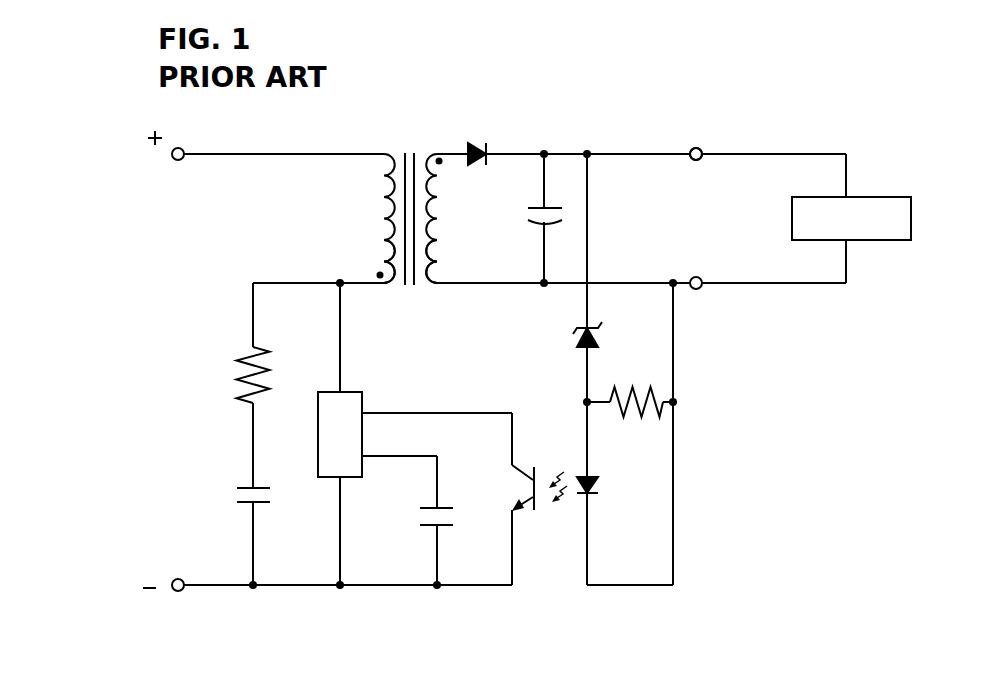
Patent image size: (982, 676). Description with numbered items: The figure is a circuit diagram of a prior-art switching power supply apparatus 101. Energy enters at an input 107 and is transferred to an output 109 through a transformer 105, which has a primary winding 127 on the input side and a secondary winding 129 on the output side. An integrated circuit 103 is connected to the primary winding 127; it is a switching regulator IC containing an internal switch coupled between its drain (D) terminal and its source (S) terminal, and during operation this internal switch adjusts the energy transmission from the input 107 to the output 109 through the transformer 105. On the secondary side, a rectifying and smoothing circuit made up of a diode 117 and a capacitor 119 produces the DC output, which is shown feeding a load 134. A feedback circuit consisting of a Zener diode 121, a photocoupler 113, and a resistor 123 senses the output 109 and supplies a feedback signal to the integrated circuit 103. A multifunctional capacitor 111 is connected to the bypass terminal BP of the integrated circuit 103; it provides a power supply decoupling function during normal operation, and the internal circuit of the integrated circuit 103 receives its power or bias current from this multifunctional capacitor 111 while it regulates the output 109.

The switching power supply apparatus 101 is at (884, 68).
The integrated circuit 103 is at (318, 423).
The transformer 105 is at (407, 148).
The input 107 is at (98, 340).
The output 109 is at (696, 146).
The multifunctional capacitor 111 is at (420, 515).
The photocoupler 113 is at (552, 515).
The diode 117 is at (481, 130).
The capacitor 119 is at (525, 222).
The Zener diode 121 is at (570, 340).
The resistor 123 is at (633, 385).
The primary winding 127 is at (390, 293).
The secondary winding 129 is at (420, 293).
The load 134 is at (907, 196).